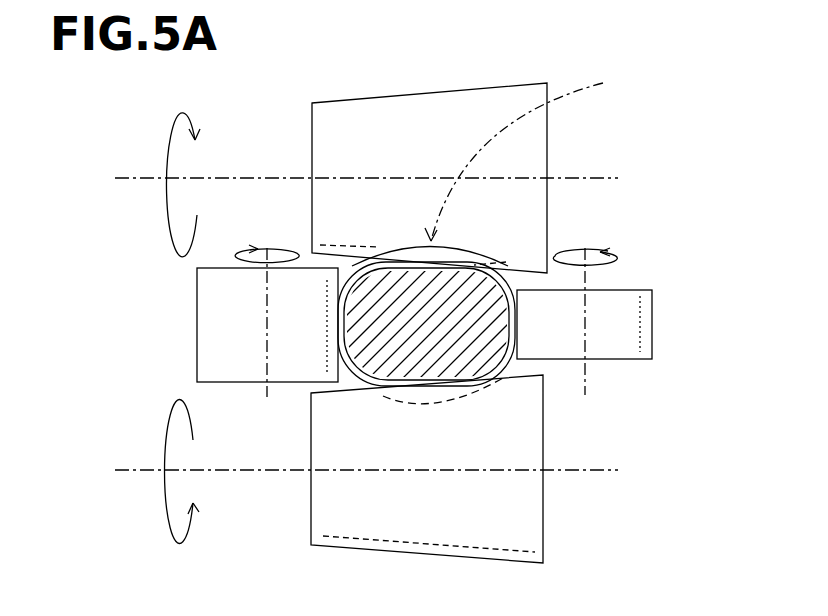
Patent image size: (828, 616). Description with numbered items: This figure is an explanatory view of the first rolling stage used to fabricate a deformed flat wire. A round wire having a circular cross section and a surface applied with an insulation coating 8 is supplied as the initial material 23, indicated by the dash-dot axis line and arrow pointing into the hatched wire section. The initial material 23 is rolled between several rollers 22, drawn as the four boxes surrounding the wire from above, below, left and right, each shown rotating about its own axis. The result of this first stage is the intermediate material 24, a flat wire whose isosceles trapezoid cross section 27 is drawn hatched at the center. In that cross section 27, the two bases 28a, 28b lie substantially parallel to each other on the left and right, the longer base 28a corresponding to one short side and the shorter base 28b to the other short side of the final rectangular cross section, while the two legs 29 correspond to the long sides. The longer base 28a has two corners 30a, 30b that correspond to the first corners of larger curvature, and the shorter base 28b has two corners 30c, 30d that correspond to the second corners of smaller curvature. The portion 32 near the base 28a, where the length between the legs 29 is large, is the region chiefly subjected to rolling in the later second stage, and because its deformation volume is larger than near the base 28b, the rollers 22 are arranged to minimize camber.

The insulation coating 8 is at (383, 385).
The rollers 22 is at (435, 108).
The initial material 23 is at (531, 150).
The intermediate material 24 is at (433, 385).
The isosceles trapezoid cross section 27 is at (437, 303).
The longer base 28a is at (345, 326).
The shorter base 28b is at (520, 316).
The legs 29 is at (408, 258).
The corner 30a is at (347, 382).
The corner 30b is at (316, 241).
The corner 30c is at (510, 262).
The corner 30d is at (515, 379).
The portion 32 is at (380, 262).